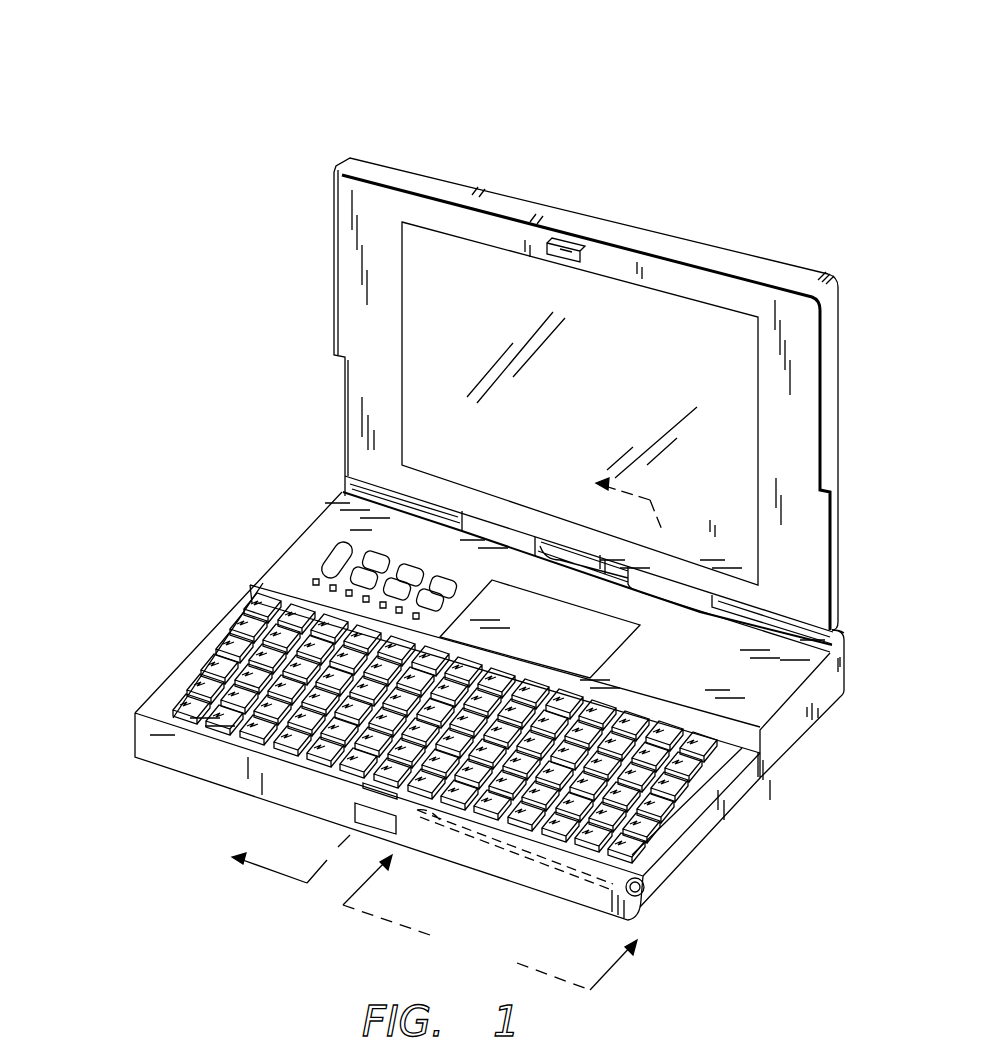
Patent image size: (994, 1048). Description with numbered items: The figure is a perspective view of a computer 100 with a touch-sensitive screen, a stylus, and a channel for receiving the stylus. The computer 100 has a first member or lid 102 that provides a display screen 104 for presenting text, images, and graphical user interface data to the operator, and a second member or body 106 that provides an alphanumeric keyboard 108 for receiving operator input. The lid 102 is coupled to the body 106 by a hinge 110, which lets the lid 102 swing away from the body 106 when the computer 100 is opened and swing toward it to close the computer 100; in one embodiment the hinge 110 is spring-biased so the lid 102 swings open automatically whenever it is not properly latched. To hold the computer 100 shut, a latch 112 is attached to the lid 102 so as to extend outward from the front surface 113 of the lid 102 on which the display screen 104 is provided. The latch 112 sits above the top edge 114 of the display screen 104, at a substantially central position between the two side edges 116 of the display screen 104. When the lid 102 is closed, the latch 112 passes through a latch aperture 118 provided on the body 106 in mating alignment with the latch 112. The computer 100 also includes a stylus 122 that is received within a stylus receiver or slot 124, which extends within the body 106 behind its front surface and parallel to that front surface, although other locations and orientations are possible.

The computer 100 is at (670, 82).
The first member or lid 102 is at (612, 237).
The display screen 104 is at (433, 343).
The second member or body 106 is at (165, 745).
The alphanumeric keyboard 108 is at (227, 653).
The hinge 110 is at (840, 645).
The latch 112 is at (566, 240).
The front surface of the first member 113 is at (443, 217).
The top edge of the display screen 114 is at (648, 283).
The side edges of the display screen 116 is at (400, 272).
The latch aperture 118 is at (363, 782).
The stylus 122 is at (645, 888).
The stylus receiver or slot 124 is at (537, 867).